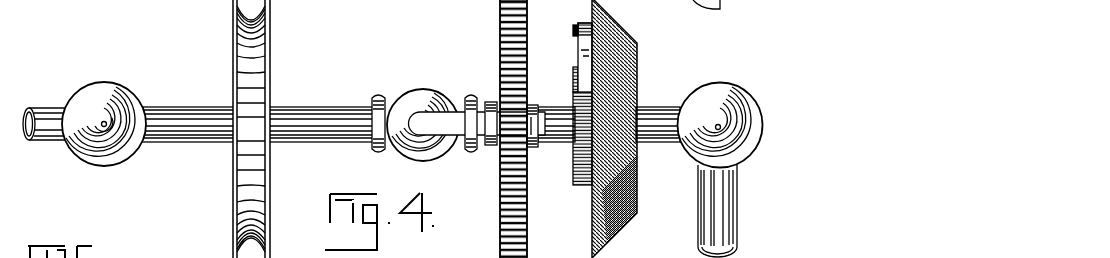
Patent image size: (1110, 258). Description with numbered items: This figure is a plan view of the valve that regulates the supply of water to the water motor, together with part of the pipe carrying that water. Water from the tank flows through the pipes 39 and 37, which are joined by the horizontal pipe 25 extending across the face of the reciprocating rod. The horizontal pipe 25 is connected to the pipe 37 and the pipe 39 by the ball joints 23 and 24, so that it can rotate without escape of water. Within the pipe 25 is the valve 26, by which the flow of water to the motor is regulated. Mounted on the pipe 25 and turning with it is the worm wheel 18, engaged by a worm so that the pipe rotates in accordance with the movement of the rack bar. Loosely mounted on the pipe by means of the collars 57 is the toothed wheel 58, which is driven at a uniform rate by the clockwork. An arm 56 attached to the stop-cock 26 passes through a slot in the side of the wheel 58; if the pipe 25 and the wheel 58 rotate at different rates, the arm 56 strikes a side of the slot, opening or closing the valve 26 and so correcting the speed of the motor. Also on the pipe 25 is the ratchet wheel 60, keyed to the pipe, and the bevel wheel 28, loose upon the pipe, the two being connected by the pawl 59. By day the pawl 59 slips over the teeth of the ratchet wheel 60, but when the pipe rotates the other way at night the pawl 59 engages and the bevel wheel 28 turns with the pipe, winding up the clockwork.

The worm wheel 18 is at (271, 47).
The ball joint 23 is at (104, 107).
The ball joint 24 is at (720, 107).
The horizontal pipe 25 is at (257, 109).
The valve 26 is at (423, 105).
The bevel wheel 28 is at (640, 70).
The pipe 37 is at (44, 105).
The pipe 39 is at (743, 211).
The arm 56 is at (477, 123).
The collar 57 is at (490, 101).
The toothed wheel 58 is at (499, 28).
The pawl 59 is at (579, 57).
The ratchet wheel 60 is at (568, 126).